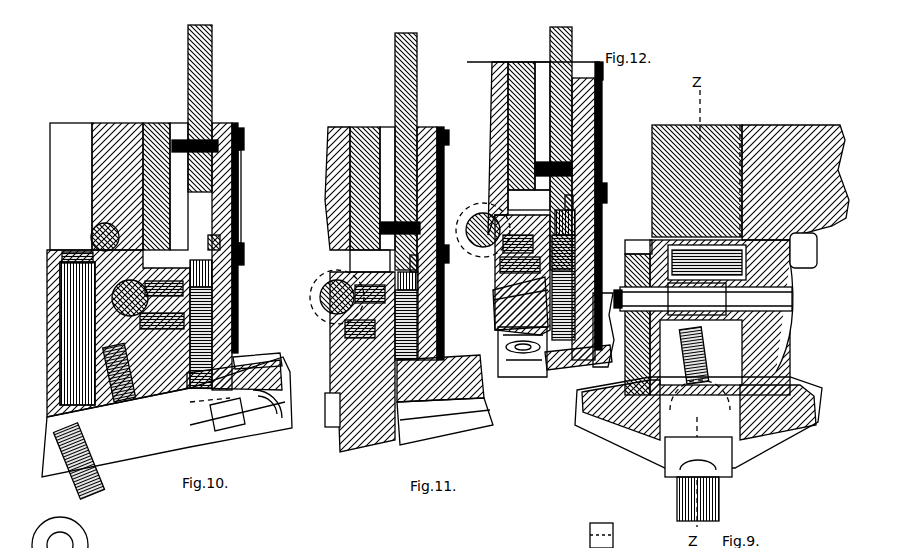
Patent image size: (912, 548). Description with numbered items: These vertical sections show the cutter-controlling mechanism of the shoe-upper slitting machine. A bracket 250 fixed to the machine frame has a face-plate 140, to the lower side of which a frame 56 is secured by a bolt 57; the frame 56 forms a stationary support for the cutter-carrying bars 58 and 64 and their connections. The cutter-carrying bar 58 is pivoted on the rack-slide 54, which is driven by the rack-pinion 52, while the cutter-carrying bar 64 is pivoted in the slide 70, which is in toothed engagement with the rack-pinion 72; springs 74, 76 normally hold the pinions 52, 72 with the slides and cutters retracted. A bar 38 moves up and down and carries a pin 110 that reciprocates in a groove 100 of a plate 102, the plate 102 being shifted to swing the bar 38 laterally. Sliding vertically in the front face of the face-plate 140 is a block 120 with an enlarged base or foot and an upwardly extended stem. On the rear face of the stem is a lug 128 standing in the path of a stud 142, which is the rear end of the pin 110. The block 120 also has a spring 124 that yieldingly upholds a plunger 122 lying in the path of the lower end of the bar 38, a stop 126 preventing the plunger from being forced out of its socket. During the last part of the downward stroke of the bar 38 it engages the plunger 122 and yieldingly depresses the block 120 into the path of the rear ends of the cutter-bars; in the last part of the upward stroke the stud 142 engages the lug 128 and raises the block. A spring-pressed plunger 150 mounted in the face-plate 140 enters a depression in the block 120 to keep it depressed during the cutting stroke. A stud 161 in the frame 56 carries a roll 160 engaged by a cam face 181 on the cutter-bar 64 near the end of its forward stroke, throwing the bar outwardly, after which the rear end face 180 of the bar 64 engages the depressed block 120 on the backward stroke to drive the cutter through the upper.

In FIG. 10, the bar 38 is at (212, 80).
In FIG. 11, the bar 38 is at (418, 40).
In FIG. 12, the bar 38 is at (550, 35).
In FIG. 9, the rack-pinion 52 is at (640, 245).
In FIG. 12, the rack-slide 54 is at (580, 399).
In FIG. 10, the frame 56 is at (95, 462).
In FIG. 11, the frame 56 is at (326, 425).
In FIG. 9, the frame 56 is at (607, 438).
In FIG. 10, the bolt 57 is at (125, 455).
In FIG. 9, the bolt 57 is at (746, 445).
In FIG. 9, the cutter-carrying bar 58 is at (632, 442).
In FIG. 9, the cutter-carrying bar 64 is at (778, 432).
In FIG. 10, the slide 70 is at (250, 425).
In FIG. 9, the slide 70 is at (806, 396).
In FIG. 9, the rack-pinion 72 is at (769, 372).
In FIG. 9, the spring 74 is at (770, 290).
In FIG. 9, the spring 76 is at (628, 266).
In FIG. 10, the groove 100 is at (178, 135).
In FIG. 11, the groove 100 is at (388, 127).
In FIG. 12, the groove 100 is at (543, 70).
In FIG. 10, the plate 102 is at (160, 137).
In FIG. 11, the plate 102 is at (355, 231).
In FIG. 12, the plate 102 is at (520, 80).
In FIG. 10, the pin 110 is at (182, 140).
In FIG. 11, the pin 110 is at (380, 228).
In FIG. 12, the pin 110 is at (540, 168).
In FIG. 10, the block 120 is at (238, 196).
In FIG. 11, the block 120 is at (470, 420).
In FIG. 12, the block 120 is at (603, 122).
In FIG. 10, the plunger 122 is at (236, 273).
In FIG. 11, the plunger 122 is at (420, 285).
In FIG. 12, the plunger 122 is at (586, 222).
In FIG. 10, the spring 124 is at (236, 318).
In FIG. 11, the spring 124 is at (420, 322).
In FIG. 12, the spring 124 is at (495, 300).
In FIG. 10, the stop 126 is at (216, 240).
In FIG. 11, the stop 126 is at (425, 268).
In FIG. 12, the stop 126 is at (598, 192).
In FIG. 10, the lug 128 is at (215, 125).
In FIG. 11, the lug 128 is at (422, 127).
In FIG. 12, the lug 128 is at (578, 80).
In FIG. 10, the face-plate 140 is at (101, 134).
In FIG. 11, the face-plate 140 is at (340, 127).
In FIG. 12, the face-plate 140 is at (500, 318).
In FIG. 9, the face-plate 140 is at (719, 137).
In FIG. 10, the stud 142 is at (235, 128).
In FIG. 11, the stud 142 is at (441, 210).
In FIG. 12, the stud 142 is at (599, 160).
In FIG. 10, the spring-pressed plunger 150 is at (288, 395).
In FIG. 11, the spring-pressed plunger 150 is at (347, 395).
In FIG. 12, the spring-pressed plunger 150 is at (505, 320).
In FIG. 10, the roll 160 is at (166, 470).
In FIG. 11, the roll 160 is at (352, 452).
In FIG. 12, the roll 160 is at (535, 380).
In FIG. 10, the stud 161 is at (222, 425).
In FIG. 12, the stud 161 is at (527, 367).
In FIG. 10, the rear end face 180 is at (283, 370).
In FIG. 11, the rear end face 180 is at (345, 385).
In FIG. 10, the cam face 181 is at (283, 358).
In FIG. 9, the bracket 250 is at (800, 137).